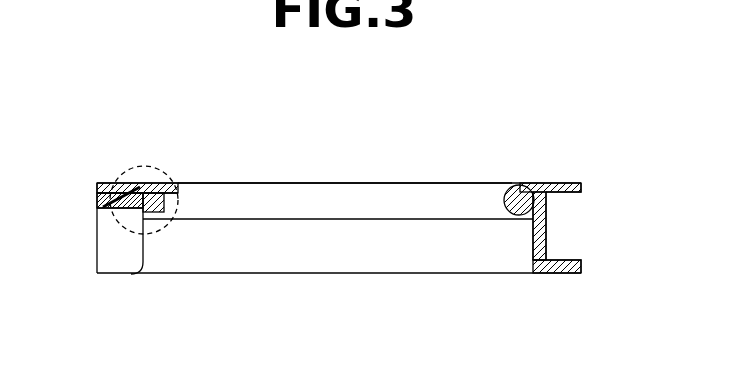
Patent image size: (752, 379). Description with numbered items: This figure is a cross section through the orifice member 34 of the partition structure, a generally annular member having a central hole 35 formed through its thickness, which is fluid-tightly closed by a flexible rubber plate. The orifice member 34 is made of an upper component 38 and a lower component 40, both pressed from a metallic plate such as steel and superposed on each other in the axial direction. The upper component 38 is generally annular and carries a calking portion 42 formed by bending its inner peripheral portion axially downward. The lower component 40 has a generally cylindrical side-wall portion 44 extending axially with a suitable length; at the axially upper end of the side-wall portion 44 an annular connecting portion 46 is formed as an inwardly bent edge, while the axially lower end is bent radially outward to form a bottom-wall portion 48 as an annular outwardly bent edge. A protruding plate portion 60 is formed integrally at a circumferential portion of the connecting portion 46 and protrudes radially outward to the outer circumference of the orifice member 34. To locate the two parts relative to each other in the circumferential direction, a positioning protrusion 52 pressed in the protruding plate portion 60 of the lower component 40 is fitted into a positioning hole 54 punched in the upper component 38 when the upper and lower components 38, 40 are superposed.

The orifice member 34 is at (545, 137).
The central hole 35 is at (333, 202).
The upper component 38 is at (102, 183).
The lower component 40 is at (122, 209).
The calking portion 42 is at (180, 194).
The side-wall portion 44 is at (547, 228).
The annular connecting portion 46 is at (527, 194).
The bottom-wall portion 48 is at (571, 260).
The positioning protrusion 52 is at (140, 195).
The positioning hole 54 is at (143, 207).
The protruding plate portion 60 is at (133, 190).